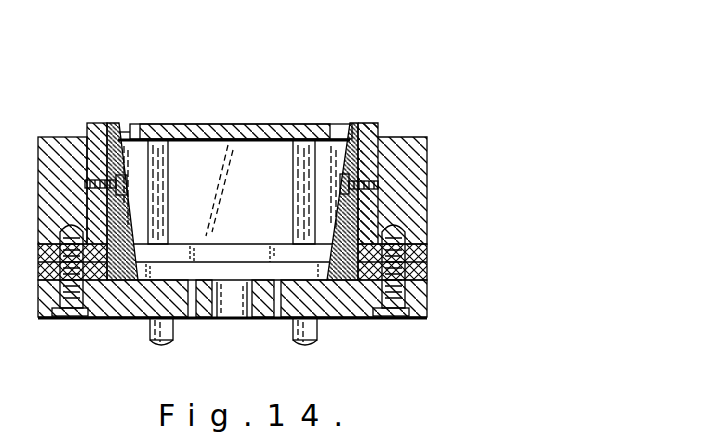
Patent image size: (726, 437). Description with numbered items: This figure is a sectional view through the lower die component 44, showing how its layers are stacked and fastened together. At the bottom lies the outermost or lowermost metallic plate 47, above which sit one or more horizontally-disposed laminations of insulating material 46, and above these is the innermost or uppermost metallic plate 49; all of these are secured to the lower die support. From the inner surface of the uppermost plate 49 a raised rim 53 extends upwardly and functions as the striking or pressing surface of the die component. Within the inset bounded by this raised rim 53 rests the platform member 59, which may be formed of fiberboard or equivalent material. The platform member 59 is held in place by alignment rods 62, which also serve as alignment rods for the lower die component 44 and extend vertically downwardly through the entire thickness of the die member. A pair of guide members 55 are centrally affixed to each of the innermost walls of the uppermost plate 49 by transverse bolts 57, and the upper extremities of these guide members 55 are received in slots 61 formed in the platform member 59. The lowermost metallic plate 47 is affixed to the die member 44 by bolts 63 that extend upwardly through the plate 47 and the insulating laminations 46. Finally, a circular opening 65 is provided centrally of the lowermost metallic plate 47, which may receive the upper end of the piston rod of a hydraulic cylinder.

The lower die component 44 is at (455, 35).
The laminations of insulating material 46 is at (427, 261).
The outermost or lowermost metallic plate 47 is at (427, 294).
The innermost or uppermost metallic plate 49 is at (60, 137).
The raised rim 53 is at (97, 123).
The guide members 55 is at (118, 124).
The transverse bolts 57 is at (127, 186).
The platform member 59 is at (263, 124).
The slots 61 is at (136, 126).
The alignment rods 62 is at (172, 150).
The bolts 63 is at (82, 319).
The circular opening 65 is at (247, 306).